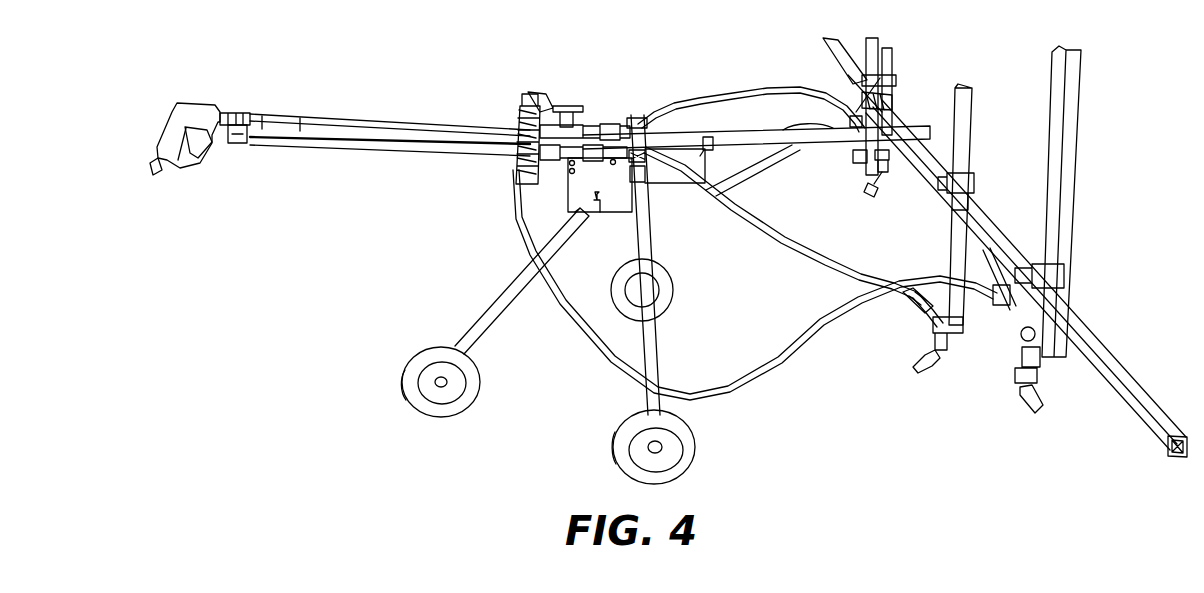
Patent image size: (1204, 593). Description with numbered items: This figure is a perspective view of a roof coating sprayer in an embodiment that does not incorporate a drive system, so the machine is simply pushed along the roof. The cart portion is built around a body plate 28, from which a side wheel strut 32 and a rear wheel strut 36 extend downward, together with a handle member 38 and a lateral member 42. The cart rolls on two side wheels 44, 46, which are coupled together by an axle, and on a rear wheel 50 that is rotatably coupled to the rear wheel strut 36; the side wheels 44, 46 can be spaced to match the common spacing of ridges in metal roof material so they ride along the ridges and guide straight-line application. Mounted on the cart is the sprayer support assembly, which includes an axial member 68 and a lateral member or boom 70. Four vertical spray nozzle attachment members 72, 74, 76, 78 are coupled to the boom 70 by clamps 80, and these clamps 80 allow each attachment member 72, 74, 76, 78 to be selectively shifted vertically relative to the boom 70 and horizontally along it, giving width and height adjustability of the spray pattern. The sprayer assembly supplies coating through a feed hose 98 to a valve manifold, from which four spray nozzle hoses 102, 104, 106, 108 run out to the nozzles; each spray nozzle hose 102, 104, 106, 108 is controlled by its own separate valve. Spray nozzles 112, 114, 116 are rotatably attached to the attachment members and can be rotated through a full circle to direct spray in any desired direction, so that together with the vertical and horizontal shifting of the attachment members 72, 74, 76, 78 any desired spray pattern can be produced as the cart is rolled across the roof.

The body plate 28 is at (566, 210).
The side wheel strut 32 is at (655, 343).
The rear wheel strut 36 is at (507, 297).
The handle member 38 is at (462, 150).
The lateral member 42 is at (648, 180).
The side wheel 44 is at (678, 282).
The side wheel 46 is at (687, 453).
The rear wheel 50 is at (431, 347).
The axial member 68 is at (797, 149).
The lateral member 70 is at (1103, 350).
The vertical spray nozzle attachment member 72 is at (863, 62).
The vertical spray nozzle attachment member 74 is at (883, 53).
The vertical spray nozzle attachment member 76 is at (963, 132).
The vertical spray nozzle attachment member 78 is at (1058, 193).
The clamp 80 is at (893, 98).
The feed hose 98 is at (468, 124).
The spray nozzle hose 102 is at (753, 95).
The spray nozzle hose 104 is at (752, 178).
The spray nozzle hose 106 is at (838, 278).
The spray nozzle hose 108 is at (777, 370).
The spray nozzle 112 is at (866, 198).
The spray nozzle 114 is at (925, 367).
The spray nozzle 116 is at (1023, 410).